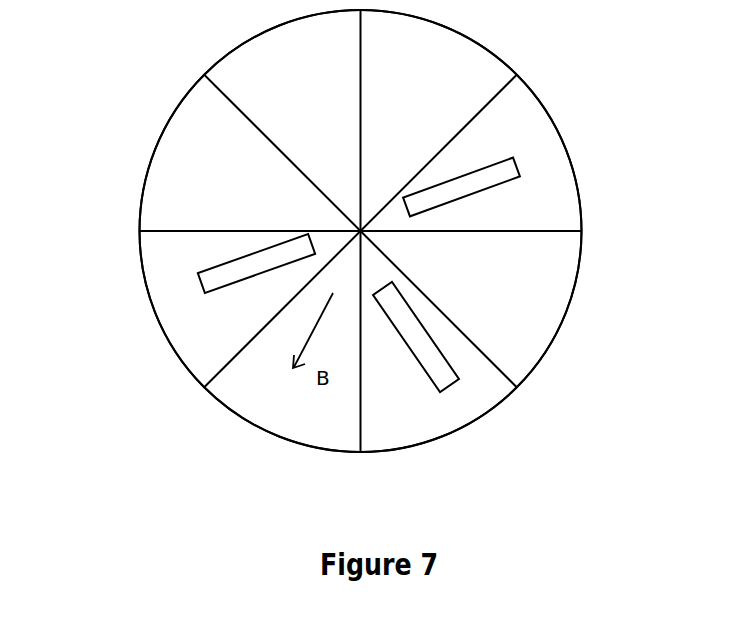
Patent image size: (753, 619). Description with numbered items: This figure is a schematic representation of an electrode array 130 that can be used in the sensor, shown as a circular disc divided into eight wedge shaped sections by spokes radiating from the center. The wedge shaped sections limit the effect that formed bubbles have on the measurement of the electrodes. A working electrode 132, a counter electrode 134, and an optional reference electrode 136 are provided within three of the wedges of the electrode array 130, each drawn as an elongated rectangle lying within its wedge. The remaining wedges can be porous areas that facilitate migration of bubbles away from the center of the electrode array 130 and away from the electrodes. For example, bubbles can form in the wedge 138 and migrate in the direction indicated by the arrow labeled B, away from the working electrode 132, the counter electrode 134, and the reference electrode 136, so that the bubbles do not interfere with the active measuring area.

The electrode array 130 is at (579, 413).
The working electrode 132 is at (433, 352).
The counter electrode 134 is at (201, 291).
The reference electrode 136 is at (517, 168).
The wedge 138 is at (276, 418).